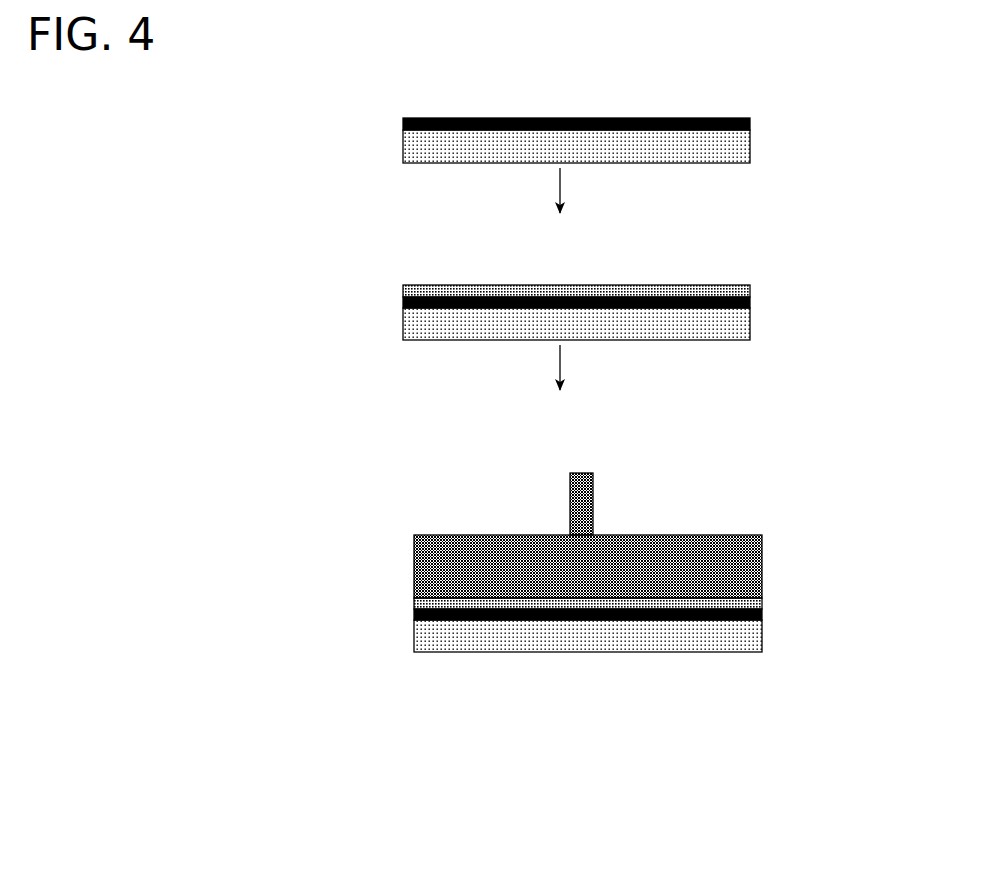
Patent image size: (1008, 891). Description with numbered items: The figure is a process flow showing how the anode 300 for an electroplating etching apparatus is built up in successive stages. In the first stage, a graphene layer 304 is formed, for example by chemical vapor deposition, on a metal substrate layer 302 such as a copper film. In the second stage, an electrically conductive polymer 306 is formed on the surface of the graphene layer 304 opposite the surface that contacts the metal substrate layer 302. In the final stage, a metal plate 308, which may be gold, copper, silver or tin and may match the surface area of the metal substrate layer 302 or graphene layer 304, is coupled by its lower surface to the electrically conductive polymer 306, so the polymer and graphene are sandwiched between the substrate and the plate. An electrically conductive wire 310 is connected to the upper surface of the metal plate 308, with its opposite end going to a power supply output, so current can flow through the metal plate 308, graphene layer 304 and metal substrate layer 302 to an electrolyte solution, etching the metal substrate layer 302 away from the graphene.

The anode 300 is at (511, 541).
The metal substrate layer 302 is at (753, 148).
The graphene layer 304 is at (746, 120).
The electrically conductive polymer 306 is at (750, 285).
The metal plate 308 is at (753, 548).
The electrically conductive wire 310 is at (597, 487).